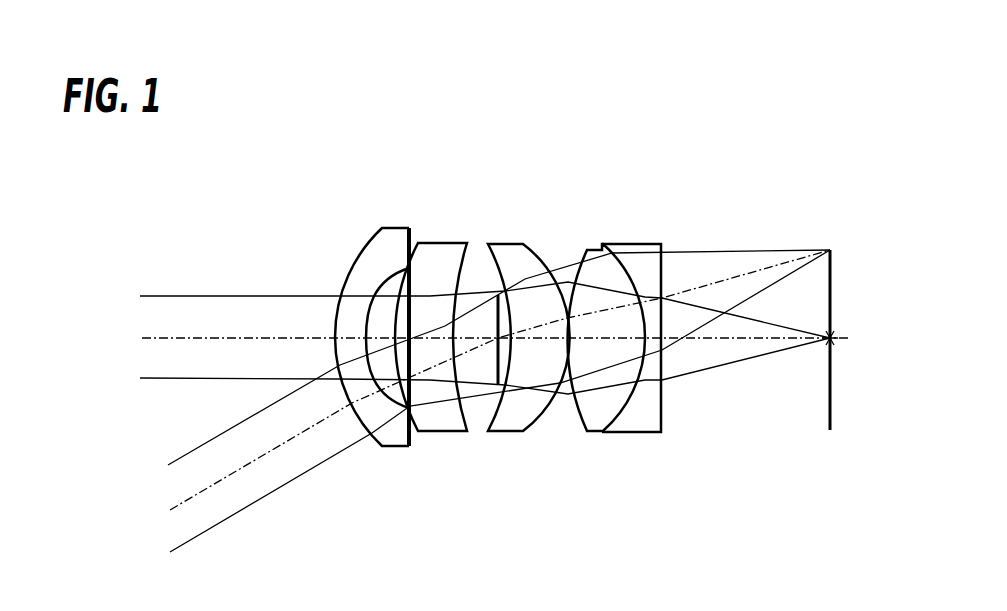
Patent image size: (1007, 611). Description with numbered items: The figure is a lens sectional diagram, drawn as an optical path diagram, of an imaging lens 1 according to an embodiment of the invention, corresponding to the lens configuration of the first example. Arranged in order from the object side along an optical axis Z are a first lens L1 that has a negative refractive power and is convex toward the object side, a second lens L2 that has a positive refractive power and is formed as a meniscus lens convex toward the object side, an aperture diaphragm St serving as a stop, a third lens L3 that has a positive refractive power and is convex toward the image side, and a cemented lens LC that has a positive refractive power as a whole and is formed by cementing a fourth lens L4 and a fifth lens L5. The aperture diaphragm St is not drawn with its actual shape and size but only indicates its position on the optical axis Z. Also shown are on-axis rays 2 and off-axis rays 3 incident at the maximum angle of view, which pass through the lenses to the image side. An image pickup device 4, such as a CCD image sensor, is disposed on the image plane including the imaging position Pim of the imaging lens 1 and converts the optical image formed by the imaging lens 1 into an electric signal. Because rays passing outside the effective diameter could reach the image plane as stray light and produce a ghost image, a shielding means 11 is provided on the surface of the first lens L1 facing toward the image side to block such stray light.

The imaging lens 1 is at (645, 158).
The on-axis rays 2 is at (136, 296).
The off-axis rays 3 is at (163, 463).
The image pickup device 4 is at (833, 408).
The shielding means 11 is at (412, 443).
The optical axis Z is at (245, 337).
The imaging position Pim is at (833, 334).
The first lens L1 is at (386, 329).
The second lens L2 is at (443, 243).
The aperture diaphragm St is at (480, 292).
The third lens L3 is at (523, 244).
The cemented lens LC is at (667, 202).
The fourth lens L4 is at (597, 248).
The fifth lens L5 is at (645, 246).